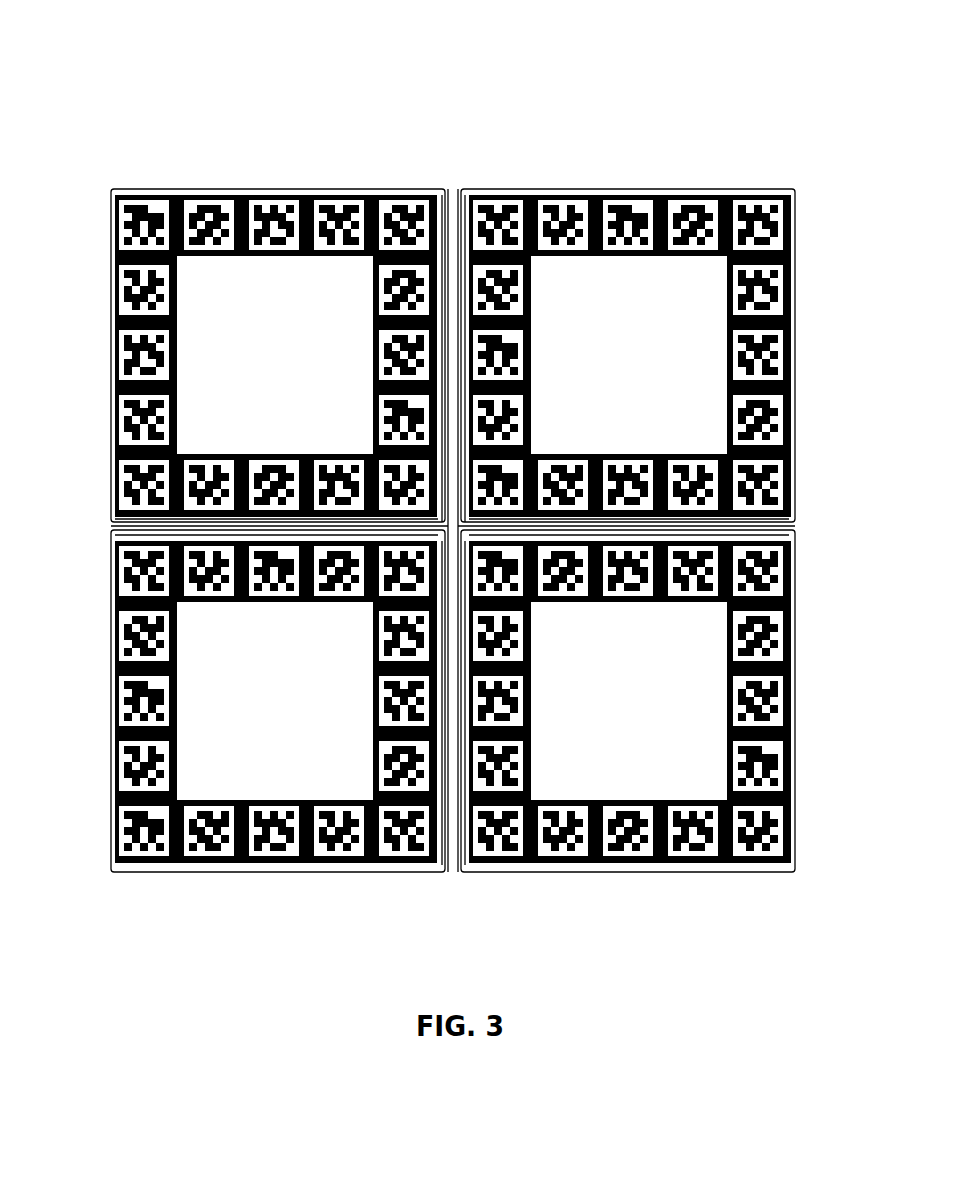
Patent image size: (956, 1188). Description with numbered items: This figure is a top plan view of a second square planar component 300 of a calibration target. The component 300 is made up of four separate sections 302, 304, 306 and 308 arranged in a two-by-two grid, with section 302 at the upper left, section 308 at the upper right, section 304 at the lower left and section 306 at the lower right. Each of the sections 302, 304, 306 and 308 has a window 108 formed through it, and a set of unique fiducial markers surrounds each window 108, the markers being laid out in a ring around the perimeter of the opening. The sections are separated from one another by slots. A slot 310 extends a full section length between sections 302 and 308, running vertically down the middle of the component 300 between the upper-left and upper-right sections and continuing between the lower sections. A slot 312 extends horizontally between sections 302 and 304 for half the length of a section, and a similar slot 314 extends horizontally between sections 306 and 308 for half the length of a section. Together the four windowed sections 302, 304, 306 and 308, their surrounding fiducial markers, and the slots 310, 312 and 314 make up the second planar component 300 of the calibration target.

The second square planar component 300 is at (455, 475).
The section 302 is at (278, 320).
The section 304 is at (186, 866).
The section 306 is at (718, 868).
The section 308 is at (722, 182).
The slot 310 is at (445, 182).
The slot 312 is at (105, 522).
The slot 314 is at (782, 523).
The window 108 is at (283, 344).